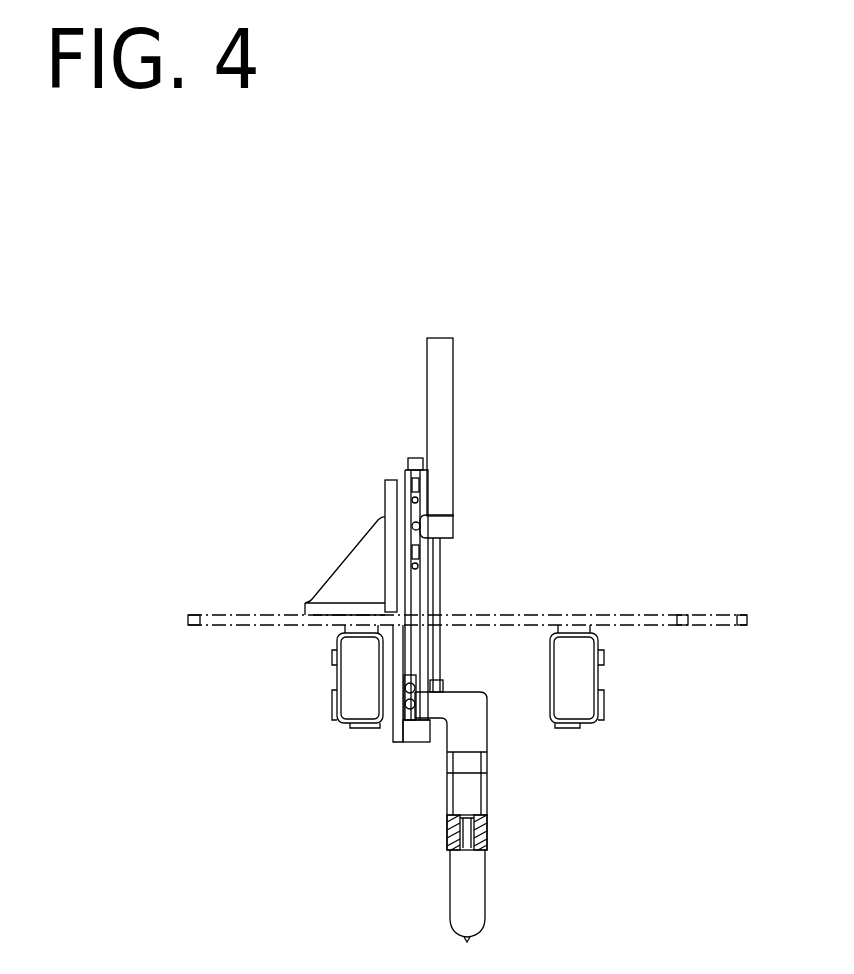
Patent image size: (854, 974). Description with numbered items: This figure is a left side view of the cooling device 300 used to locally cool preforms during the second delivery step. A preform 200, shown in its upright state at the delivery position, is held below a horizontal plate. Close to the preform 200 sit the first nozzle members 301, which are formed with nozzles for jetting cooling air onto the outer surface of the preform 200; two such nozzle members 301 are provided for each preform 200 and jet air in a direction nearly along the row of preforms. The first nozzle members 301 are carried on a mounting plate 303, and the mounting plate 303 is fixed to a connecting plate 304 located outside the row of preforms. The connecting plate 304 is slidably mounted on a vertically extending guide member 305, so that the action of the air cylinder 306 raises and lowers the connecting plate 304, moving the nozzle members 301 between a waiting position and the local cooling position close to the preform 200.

The cooling device 300 is at (692, 363).
The air cylinder 306 is at (440, 396).
The guide member 305 is at (340, 641).
The connecting plate 304 is at (402, 726).
The mounting plate 303 is at (477, 738).
The first nozzle member 301 is at (445, 830).
The preform 200 is at (470, 905).